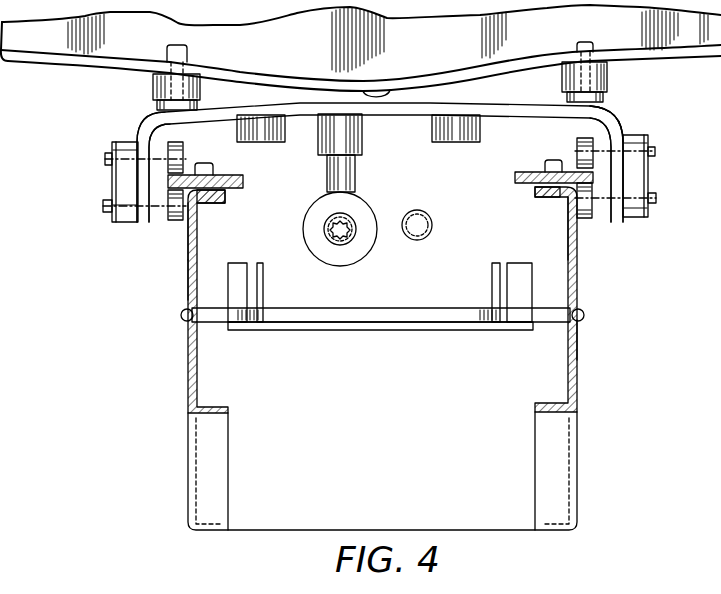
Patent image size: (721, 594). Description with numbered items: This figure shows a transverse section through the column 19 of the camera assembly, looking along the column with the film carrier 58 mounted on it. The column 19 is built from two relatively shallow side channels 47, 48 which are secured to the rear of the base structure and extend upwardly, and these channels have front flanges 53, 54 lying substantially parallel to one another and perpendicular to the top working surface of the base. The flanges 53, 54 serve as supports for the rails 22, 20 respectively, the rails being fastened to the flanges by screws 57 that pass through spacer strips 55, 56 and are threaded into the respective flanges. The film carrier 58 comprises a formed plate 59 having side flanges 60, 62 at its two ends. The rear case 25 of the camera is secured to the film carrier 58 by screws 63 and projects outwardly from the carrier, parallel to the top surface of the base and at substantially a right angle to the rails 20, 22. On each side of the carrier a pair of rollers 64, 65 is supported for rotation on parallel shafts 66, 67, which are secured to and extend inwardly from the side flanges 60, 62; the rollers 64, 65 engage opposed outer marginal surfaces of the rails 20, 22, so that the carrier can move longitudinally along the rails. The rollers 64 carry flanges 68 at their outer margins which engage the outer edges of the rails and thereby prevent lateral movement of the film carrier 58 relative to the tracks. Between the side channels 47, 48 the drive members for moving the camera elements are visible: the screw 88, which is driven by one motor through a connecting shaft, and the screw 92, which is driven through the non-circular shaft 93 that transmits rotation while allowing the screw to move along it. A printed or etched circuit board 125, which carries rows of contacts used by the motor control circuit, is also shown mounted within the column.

The column 19 is at (580, 270).
The rail 20 is at (515, 178).
The rail 22 is at (245, 182).
The rear case 25 is at (67, 68).
The side channel 47 is at (189, 286).
The side channel 48 is at (578, 333).
The front flange 53 is at (210, 203).
The front flange 54 is at (546, 199).
The spacer strip 55 is at (225, 197).
The spacer strip 56 is at (533, 190).
The screw 57 is at (214, 170).
The film carrier 58 is at (612, 122).
The formed plate 59 is at (437, 103).
The side flange 60 is at (140, 176).
The side flange 62 is at (618, 176).
The screw 63 is at (185, 52).
The roller 64 is at (166, 142).
The roller 65 is at (176, 221).
The shaft 66 is at (105, 158).
The shaft 67 is at (103, 207).
The flange 68 is at (166, 143).
The screw 88 is at (420, 232).
The screw 92 is at (333, 236).
The shaft 93 is at (345, 232).
The printed circuit board 125 is at (516, 330).